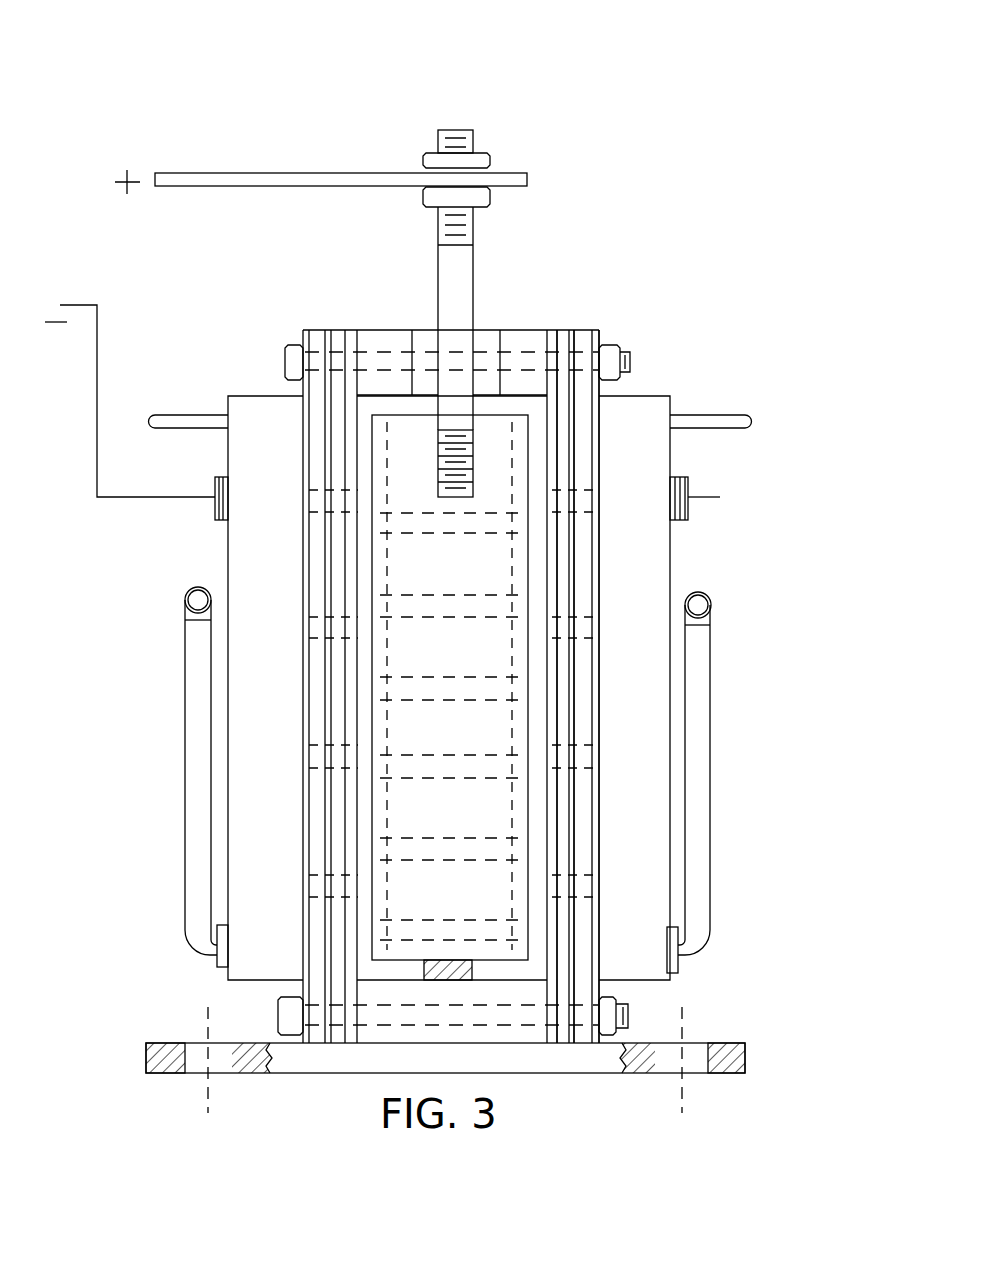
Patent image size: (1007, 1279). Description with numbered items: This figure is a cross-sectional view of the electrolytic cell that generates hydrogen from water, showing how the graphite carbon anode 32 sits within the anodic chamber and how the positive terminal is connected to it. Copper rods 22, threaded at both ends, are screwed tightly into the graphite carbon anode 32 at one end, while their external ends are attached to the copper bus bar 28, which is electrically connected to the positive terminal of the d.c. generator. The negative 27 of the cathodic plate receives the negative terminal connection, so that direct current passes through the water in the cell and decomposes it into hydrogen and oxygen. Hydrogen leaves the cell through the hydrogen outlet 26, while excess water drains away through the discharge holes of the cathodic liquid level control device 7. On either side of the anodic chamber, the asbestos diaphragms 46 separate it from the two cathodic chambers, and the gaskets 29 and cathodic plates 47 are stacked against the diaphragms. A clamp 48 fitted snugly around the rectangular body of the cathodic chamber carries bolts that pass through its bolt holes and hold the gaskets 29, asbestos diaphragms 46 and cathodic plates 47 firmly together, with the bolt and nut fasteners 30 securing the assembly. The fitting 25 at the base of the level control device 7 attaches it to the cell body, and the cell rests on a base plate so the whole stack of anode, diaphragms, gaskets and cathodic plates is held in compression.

The cathodic liquid level control device 7 is at (185, 598).
The copper rod 22 is at (475, 273).
The handle fitting 25 is at (212, 946).
The hydrogen outlet 26 is at (172, 412).
The negative of the cathodic plate 27 is at (690, 507).
The copper bus bar 28 is at (195, 172).
The gasket 29 is at (557, 455).
The clamping bolt and nut 30 is at (632, 355).
The graphite carbon anode 32 is at (530, 565).
The asbestos diaphragm 46 is at (562, 710).
The cathodic plate 47 is at (582, 825).
The clamp 48 is at (597, 938).